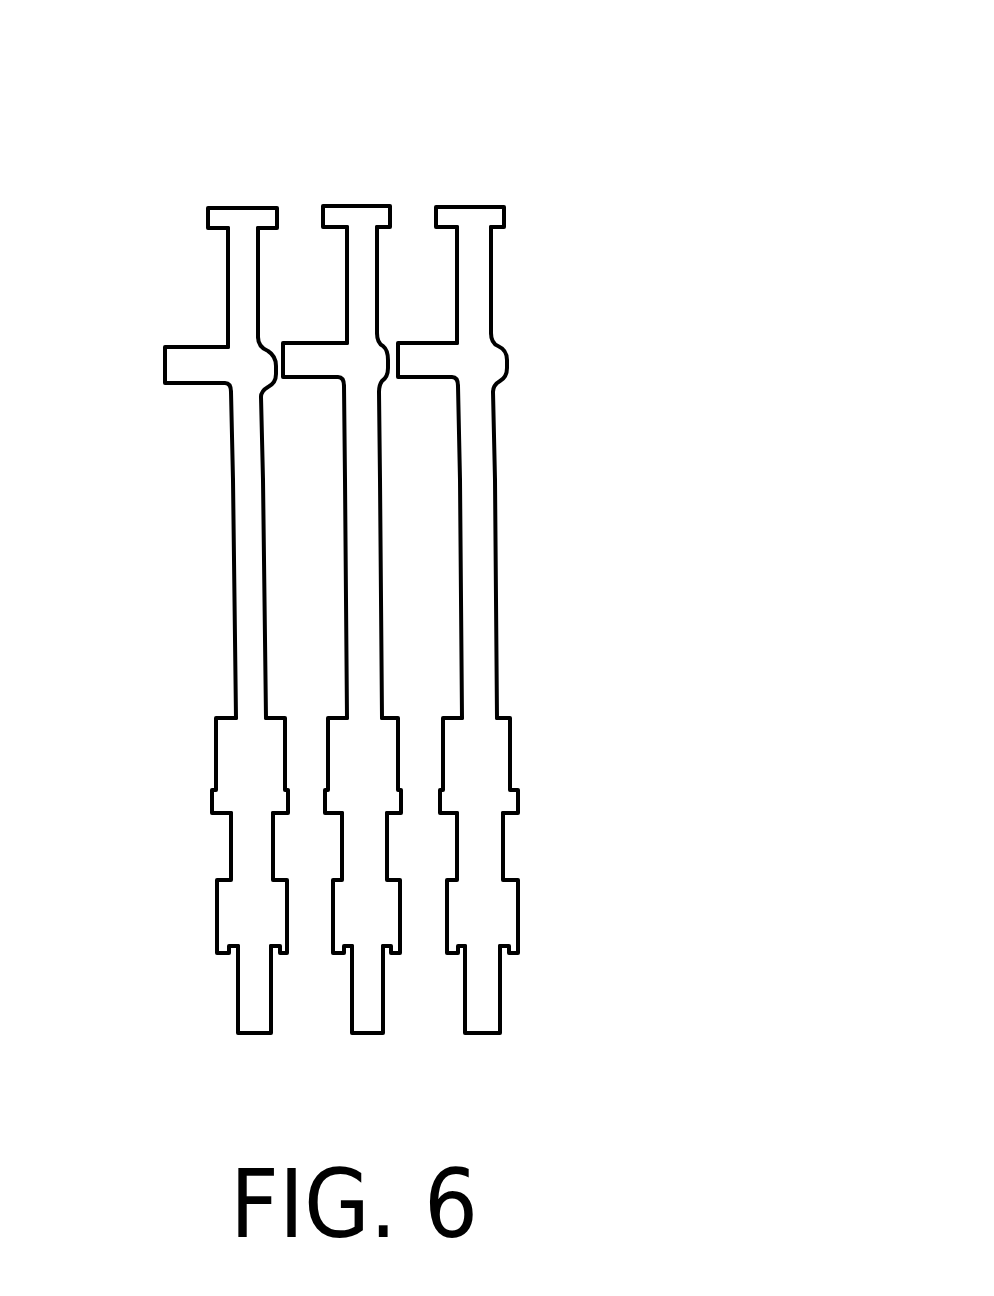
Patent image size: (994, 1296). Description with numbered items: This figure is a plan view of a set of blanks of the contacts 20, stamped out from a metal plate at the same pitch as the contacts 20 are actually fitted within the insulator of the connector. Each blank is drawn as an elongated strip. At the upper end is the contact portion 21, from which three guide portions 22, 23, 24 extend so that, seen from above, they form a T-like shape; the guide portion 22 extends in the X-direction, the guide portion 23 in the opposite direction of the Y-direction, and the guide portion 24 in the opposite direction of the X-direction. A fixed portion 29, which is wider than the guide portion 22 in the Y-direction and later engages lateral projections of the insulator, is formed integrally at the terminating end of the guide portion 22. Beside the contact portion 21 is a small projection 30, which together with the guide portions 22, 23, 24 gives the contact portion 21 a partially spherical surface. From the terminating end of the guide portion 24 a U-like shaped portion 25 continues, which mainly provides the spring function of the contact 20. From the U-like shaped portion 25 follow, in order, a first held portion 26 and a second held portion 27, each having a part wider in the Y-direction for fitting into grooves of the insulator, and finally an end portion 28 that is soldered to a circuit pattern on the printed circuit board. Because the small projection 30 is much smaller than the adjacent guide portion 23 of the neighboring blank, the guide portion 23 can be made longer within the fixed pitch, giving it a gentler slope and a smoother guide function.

The contact 20 is at (598, 122).
The contact portion 21 is at (473, 360).
The guide portion 22 is at (233, 271).
The guide portion 23 is at (198, 346).
The guide portion 24 is at (237, 434).
The U-like shaped portion 25 is at (237, 521).
The first held portion 26 is at (233, 763).
The second held portion 27 is at (232, 906).
The end portion 28 is at (247, 997).
The fixed portion 29 is at (247, 208).
The small projection 30 is at (497, 338).